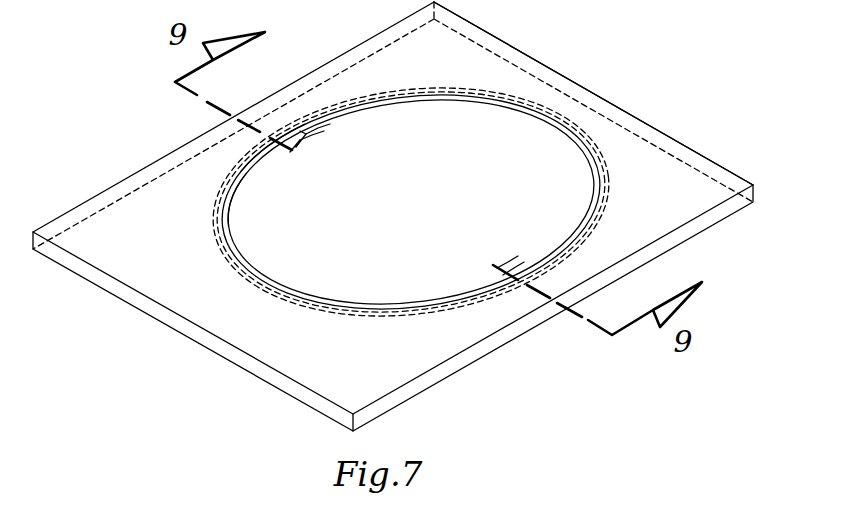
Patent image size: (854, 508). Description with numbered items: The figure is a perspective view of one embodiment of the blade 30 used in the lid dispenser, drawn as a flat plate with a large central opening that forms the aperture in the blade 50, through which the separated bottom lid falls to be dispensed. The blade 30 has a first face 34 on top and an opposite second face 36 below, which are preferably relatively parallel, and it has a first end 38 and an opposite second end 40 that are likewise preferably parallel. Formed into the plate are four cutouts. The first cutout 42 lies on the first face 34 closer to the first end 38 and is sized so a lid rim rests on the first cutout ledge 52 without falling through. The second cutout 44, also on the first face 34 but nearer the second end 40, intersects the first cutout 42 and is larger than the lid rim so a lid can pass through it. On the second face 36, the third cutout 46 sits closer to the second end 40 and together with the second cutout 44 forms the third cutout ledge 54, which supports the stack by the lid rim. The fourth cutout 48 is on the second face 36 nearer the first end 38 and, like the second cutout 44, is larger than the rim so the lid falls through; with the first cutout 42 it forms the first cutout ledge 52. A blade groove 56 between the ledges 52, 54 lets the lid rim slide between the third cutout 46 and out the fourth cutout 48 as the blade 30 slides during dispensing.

The blade 30 is at (393, 216).
The first face 34 is at (317, 357).
The second face 36 is at (433, 387).
The first end 38 is at (651, 127).
The second end 40 is at (155, 305).
The first cutout 42 is at (490, 103).
The second cutout 44 is at (253, 168).
The third cutout 46 is at (280, 168).
The fourth cutout 48 is at (380, 103).
The aperture in the blade 50 is at (409, 209).
The first cutout ledge 52 is at (600, 183).
The third cutout ledge 54 is at (233, 221).
The blade groove 56 is at (312, 143).